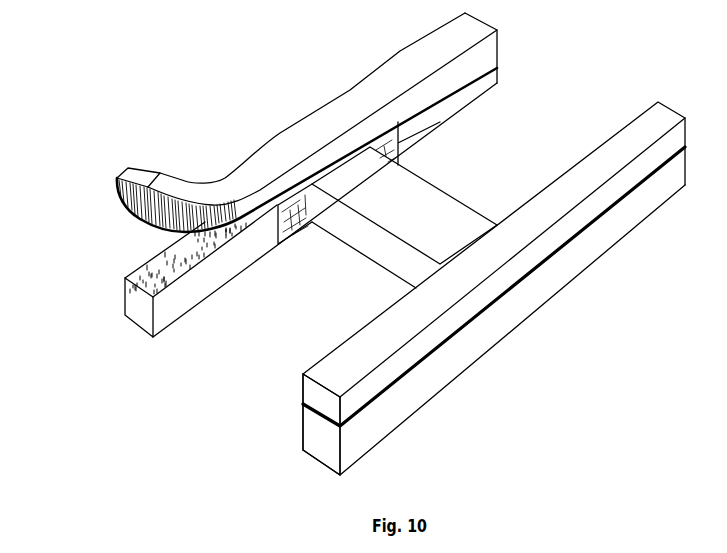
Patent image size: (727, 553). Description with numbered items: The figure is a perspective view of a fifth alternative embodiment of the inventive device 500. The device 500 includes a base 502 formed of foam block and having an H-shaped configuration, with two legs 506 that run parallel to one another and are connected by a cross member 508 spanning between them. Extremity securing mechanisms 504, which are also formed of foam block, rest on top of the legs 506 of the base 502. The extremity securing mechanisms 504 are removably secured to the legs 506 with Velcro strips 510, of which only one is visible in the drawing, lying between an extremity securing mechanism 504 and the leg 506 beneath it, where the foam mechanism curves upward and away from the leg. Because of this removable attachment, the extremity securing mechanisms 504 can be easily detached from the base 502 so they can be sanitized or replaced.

The inventive device 500 is at (206, 62).
The base 502 is at (573, 294).
The extremity securing mechanisms 504 is at (403, 67).
The legs 506 is at (188, 300).
The cross member 508 is at (362, 242).
The Velcro strips 510 is at (155, 272).